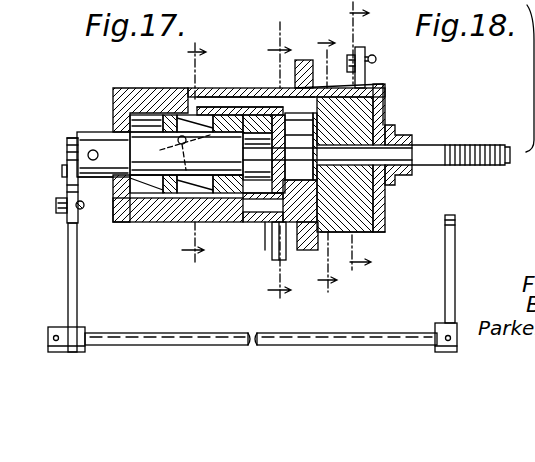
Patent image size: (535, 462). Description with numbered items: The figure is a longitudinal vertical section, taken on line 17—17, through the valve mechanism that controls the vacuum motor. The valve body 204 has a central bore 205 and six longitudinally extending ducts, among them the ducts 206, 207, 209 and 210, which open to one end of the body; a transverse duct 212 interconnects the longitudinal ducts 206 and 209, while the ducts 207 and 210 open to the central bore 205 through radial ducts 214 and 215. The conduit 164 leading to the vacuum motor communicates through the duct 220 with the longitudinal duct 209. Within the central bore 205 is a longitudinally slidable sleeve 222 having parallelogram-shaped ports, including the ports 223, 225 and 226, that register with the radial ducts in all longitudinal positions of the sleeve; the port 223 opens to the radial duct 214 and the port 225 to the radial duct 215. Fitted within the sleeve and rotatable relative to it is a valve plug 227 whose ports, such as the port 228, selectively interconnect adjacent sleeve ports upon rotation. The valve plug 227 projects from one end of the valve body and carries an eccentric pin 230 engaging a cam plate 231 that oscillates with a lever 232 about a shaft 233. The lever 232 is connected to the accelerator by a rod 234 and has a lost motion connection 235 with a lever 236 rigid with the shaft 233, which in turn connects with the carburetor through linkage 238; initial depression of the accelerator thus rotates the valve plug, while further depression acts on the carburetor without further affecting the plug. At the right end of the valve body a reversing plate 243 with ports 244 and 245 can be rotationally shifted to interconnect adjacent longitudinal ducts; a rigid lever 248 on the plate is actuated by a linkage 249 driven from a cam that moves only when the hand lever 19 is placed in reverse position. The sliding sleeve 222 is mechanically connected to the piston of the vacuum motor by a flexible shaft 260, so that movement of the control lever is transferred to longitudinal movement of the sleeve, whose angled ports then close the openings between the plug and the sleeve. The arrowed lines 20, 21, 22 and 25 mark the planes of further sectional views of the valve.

The section line 17— 17 is at (399, 91).
The hand lever 19 is at (197, 154).
The section line 20 is at (279, 157).
The section line 21 is at (321, 161).
The section line 22 is at (345, 86).
The section line 25 is at (362, 139).
The conduit 164 is at (246, 248).
The valve body 204 is at (140, 97).
The central bore 205 is at (133, 97).
The longitudinal duct 206 is at (388, 103).
The longitudinal duct 207 is at (212, 103).
The longitudinal duct 209 is at (313, 246).
The longitudinal duct 210 is at (240, 208).
The transverse duct 212 is at (390, 196).
The radial duct 214 is at (165, 117).
The radial duct 215 is at (181, 160).
The duct 220 is at (277, 223).
The slidable sleeve 222 is at (250, 115).
The sleeve port 223 is at (178, 143).
The sleeve port 225 is at (225, 255).
The sleeve port 226 is at (280, 153).
The valve plug 227 is at (221, 117).
The valve plug port 228 is at (95, 188).
The pin 230 is at (62, 170).
The cam plate 231 is at (72, 136).
The lever 232 is at (73, 257).
The shaft 233 is at (130, 346).
The rod 234 is at (84, 208).
The lost motion connection 235 is at (58, 225).
The lever 236 is at (63, 283).
The linkage 238 is at (455, 250).
The reversing plate 243 is at (386, 120).
The reversing plate port 244 is at (383, 78).
The reversing plate port 245 is at (368, 228).
The rigid lever 248 is at (362, 50).
The linkage 249 is at (378, 58).
The flexible shaft 260 is at (452, 150).